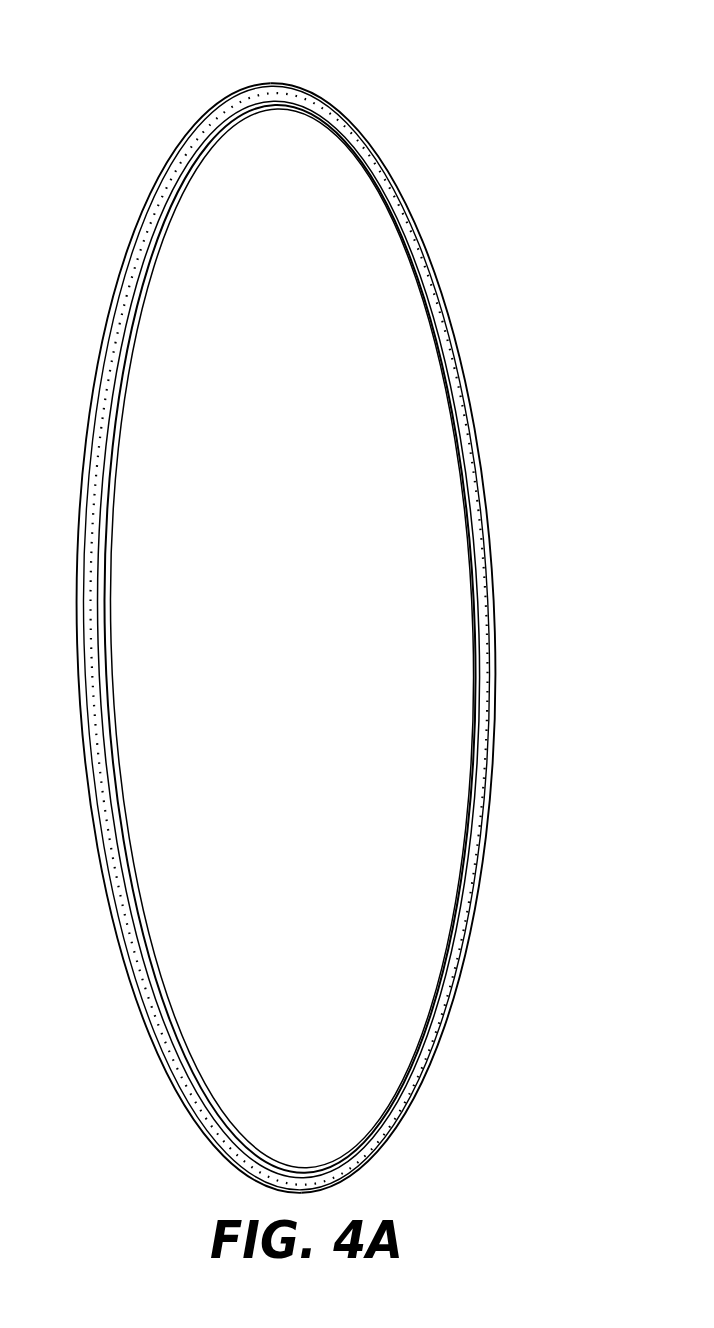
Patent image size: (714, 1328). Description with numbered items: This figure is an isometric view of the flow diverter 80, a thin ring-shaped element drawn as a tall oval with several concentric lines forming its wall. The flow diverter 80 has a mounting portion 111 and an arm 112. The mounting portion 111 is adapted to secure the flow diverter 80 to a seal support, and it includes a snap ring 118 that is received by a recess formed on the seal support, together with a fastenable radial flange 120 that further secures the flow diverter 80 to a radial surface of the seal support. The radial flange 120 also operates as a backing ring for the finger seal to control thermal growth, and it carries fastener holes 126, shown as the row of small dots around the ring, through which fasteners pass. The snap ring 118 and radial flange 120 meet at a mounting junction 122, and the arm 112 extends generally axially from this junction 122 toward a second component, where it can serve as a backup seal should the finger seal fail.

The flow diverter 80 is at (483, 158).
The flow diverter mounting portion 111 is at (102, 183).
The flow diverter arm 112 is at (180, 185).
The flow diverter snap ring 118 is at (468, 473).
The flow diverter radial flange 120 is at (285, 97).
The flow diverter mounting junction 122 is at (222, 115).
The fastener holes 126 is at (308, 102).